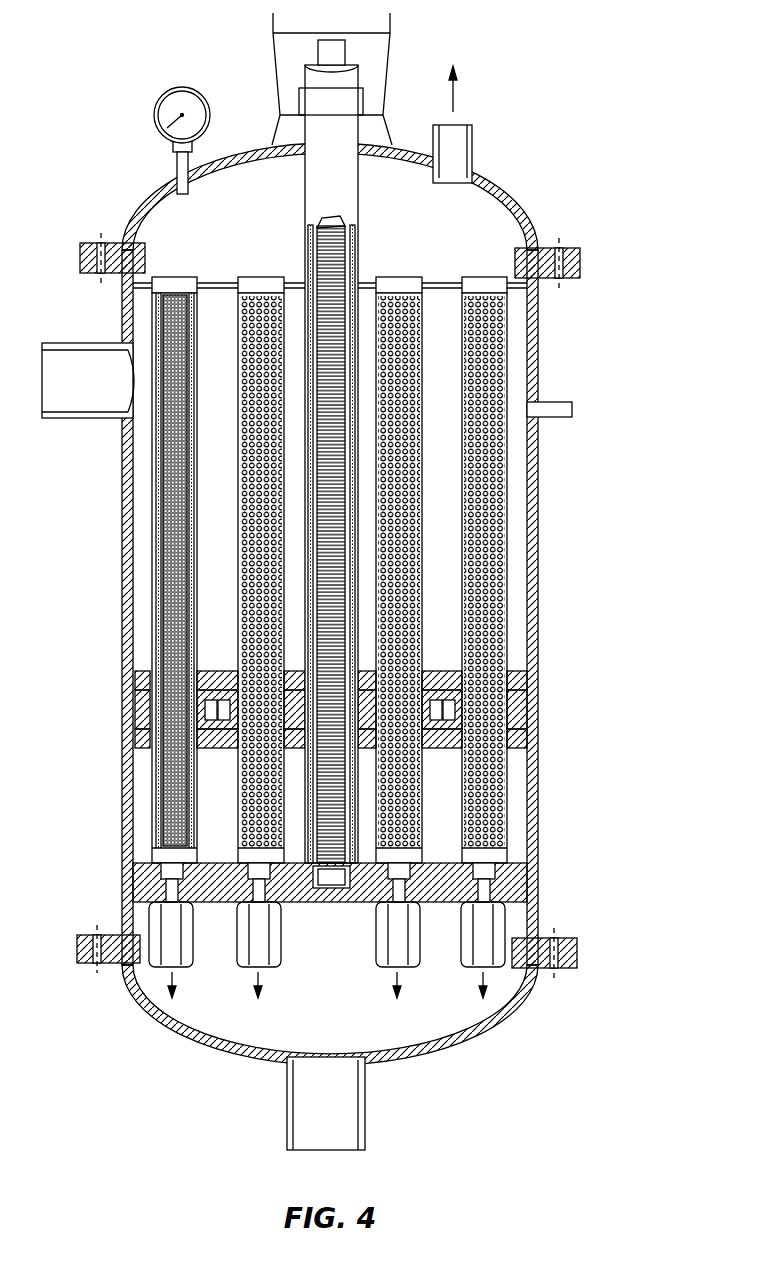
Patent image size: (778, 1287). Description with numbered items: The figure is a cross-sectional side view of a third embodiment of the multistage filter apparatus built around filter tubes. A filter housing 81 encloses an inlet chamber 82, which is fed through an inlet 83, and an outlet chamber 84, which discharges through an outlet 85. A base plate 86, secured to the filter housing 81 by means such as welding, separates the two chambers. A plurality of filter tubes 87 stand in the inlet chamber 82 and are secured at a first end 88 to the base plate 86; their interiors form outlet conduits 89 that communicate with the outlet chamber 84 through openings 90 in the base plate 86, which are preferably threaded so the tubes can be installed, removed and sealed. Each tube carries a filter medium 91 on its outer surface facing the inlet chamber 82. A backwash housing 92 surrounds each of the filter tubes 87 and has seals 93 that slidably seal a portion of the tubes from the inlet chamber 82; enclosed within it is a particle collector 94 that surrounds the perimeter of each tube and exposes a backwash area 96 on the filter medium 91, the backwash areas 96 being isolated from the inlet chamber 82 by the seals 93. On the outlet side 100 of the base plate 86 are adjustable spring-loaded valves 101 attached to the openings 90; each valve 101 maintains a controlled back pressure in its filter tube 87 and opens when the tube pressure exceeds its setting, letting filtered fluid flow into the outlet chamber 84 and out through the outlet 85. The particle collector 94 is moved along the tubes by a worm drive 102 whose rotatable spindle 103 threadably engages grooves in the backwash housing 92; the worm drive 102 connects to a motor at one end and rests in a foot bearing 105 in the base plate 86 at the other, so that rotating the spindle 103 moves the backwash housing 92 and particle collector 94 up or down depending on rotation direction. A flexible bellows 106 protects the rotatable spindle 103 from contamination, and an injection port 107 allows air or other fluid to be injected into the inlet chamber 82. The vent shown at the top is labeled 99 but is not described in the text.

The filter housing 81 is at (150, 200).
The inlet chamber 82 is at (189, 246).
The inlet 83 is at (71, 397).
The outlet chamber 84 is at (311, 1039).
The outlet 85 is at (311, 1120).
The base plate 86 is at (495, 880).
The filter tubes 87 is at (418, 306).
The first end 88 is at (420, 858).
The outlet conduits 89 is at (150, 493).
The openings 90 is at (150, 858).
The filter medium 91 is at (162, 547).
The backwash housing 92 is at (145, 737).
The seals 93 is at (145, 676).
The particle collector 94 is at (143, 692).
The backwash area 96 is at (163, 812).
The vent pipe 99 is at (453, 125).
The outlet side 100 is at (439, 903).
The adjustable spring-loaded valves 101 is at (183, 968).
The worm drive 102 is at (305, 258).
The rotatable spindle 103 is at (358, 275).
The foot bearing 105 is at (328, 888).
The flexible bellows 106 is at (350, 240).
The injection port 107 is at (573, 405).